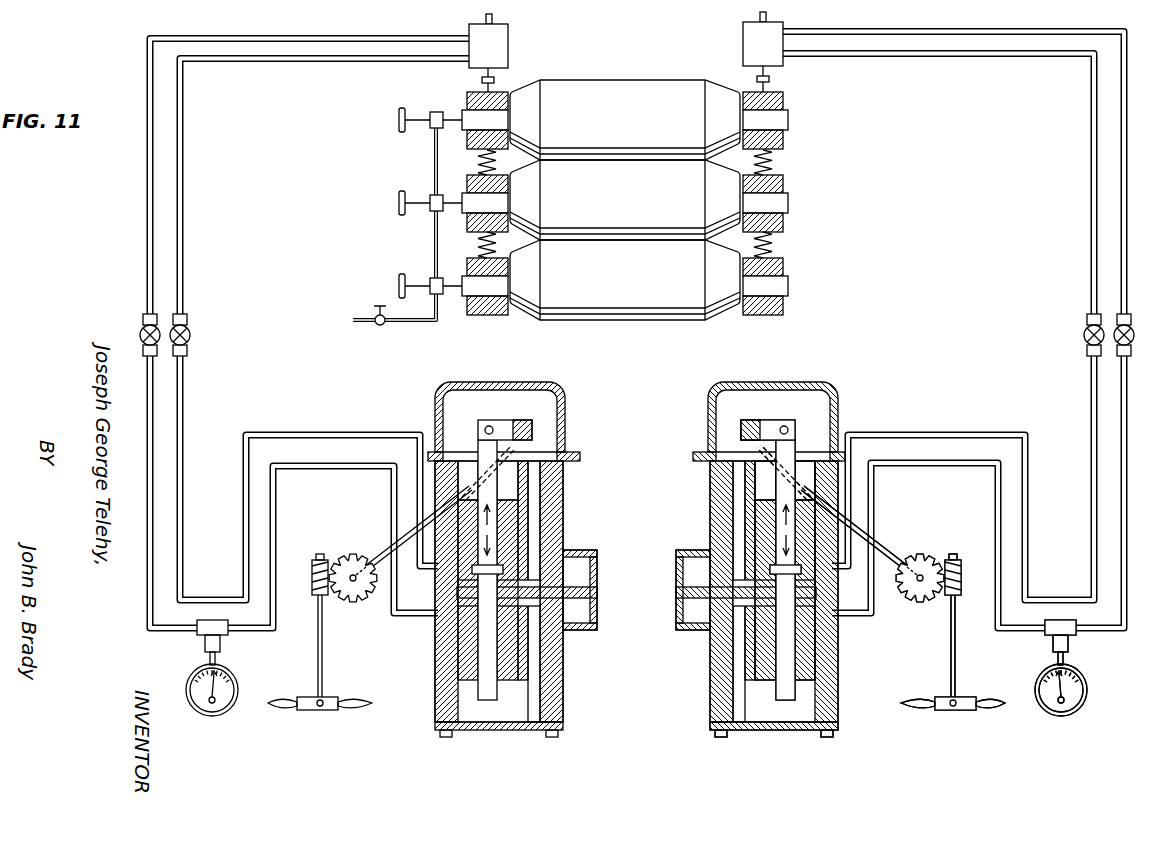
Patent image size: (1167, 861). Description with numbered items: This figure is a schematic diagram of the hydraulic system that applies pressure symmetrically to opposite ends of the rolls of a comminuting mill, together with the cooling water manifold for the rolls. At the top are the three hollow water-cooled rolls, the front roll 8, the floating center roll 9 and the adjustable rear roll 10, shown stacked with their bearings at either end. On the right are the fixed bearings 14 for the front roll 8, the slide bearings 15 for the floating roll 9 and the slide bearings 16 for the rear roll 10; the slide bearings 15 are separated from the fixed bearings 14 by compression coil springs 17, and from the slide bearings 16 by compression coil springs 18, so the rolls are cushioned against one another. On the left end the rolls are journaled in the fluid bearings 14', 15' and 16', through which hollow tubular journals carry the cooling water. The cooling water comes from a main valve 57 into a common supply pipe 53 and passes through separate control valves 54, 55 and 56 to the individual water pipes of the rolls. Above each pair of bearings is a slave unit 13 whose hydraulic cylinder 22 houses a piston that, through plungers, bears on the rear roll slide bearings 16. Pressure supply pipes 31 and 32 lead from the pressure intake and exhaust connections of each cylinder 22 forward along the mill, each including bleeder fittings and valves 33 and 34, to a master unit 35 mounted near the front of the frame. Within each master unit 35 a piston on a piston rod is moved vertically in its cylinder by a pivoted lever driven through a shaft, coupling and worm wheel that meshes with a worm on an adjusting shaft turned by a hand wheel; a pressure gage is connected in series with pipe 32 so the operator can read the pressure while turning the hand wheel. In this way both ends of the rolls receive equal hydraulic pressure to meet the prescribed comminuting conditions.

The front roll 8 is at (655, 296).
The floating center roll 9 is at (655, 216).
The adjustable rear roll 10 is at (655, 136).
The slave unit 13 is at (626, 45).
The fixed bearings 14 is at (791, 286).
The fluid bearing 14' is at (476, 303).
The slide bearings 15 is at (788, 201).
The fluid bearing 15' is at (424, 201).
The slide bearings 16 is at (786, 115).
The fluid bearing 16' is at (461, 114).
The compression coil springs 17 is at (477, 248).
The compression coil springs 18 is at (477, 162).
The hydraulic cylinder 22 is at (512, 44).
The pressure supply pipe 31 is at (306, 64).
The pressure supply pipe 32 is at (315, 40).
The bleeder fitting and valve 33 is at (187, 318).
The bleeder fitting and valve 34 is at (143, 318).
The master unit 35 is at (547, 681).
The common supply pipe 53 is at (432, 224).
The control valve 54 is at (400, 284).
The control valve 55 is at (397, 212).
The control valve 56 is at (402, 118).
The main valve 57 is at (378, 324).